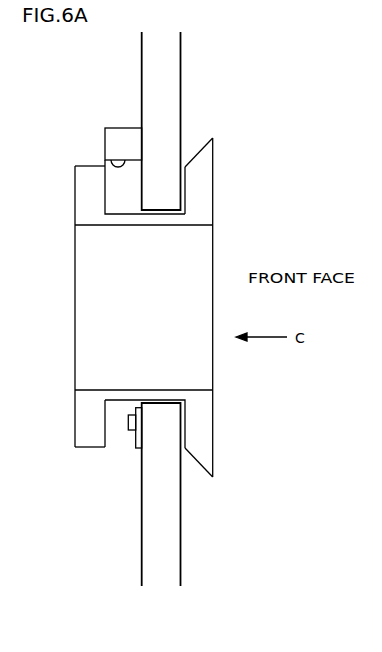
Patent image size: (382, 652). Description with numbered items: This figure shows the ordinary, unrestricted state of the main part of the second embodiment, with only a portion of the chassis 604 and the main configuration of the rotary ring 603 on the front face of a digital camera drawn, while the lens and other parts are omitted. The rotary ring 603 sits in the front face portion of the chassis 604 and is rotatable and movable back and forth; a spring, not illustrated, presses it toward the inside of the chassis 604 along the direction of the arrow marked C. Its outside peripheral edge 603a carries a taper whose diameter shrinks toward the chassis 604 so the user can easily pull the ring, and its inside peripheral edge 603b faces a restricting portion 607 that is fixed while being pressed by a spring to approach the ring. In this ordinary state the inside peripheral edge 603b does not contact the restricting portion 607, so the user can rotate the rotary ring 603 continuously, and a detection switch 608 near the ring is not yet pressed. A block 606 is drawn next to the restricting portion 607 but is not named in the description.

The rotary ring 603 is at (213, 315).
The outside peripheral edge 603a is at (198, 170).
The inside peripheral edge 603b is at (87, 430).
The chassis 604 is at (182, 485).
The block 606 is at (127, 141).
The restricting portion 607 is at (113, 165).
The detection switch 608 is at (133, 428).